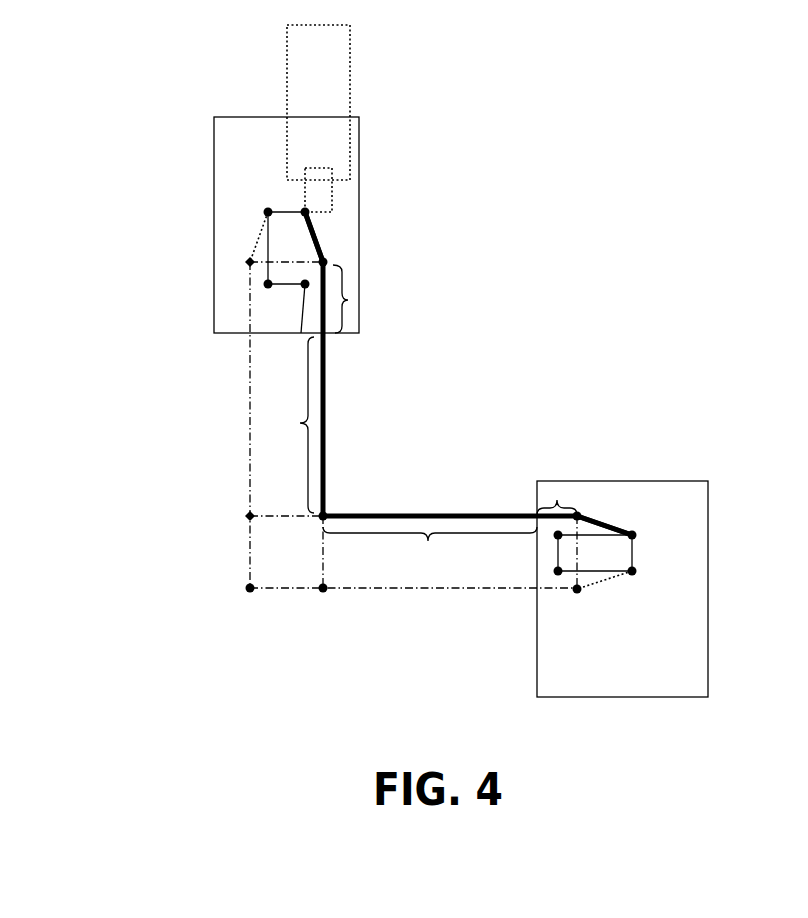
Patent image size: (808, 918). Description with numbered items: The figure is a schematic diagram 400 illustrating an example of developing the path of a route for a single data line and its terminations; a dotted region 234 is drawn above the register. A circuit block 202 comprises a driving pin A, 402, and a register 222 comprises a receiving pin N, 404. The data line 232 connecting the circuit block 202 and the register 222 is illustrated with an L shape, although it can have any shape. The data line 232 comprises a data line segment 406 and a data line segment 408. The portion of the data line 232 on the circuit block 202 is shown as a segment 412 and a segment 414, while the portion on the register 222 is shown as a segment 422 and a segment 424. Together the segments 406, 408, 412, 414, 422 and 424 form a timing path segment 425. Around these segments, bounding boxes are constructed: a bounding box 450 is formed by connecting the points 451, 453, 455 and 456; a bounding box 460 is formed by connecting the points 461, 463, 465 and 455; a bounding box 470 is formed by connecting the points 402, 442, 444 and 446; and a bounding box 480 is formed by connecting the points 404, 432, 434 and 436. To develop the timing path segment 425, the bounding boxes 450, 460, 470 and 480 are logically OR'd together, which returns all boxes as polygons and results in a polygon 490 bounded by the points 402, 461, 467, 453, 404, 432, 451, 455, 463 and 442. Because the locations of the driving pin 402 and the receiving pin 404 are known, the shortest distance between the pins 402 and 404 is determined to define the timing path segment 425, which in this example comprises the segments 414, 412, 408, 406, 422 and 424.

The system 400 is at (132, 83).
The dotted region 234 is at (350, 80).
The register 222 is at (262, 144).
The circuit block 202 is at (697, 687).
The data line 232 is at (399, 457).
The timing path segment 425 is at (511, 379).
The polygon 490 is at (219, 549).
The bounding box 480 is at (300, 208).
The point 432 is at (268, 212).
The point 451 is at (250, 262).
The point 434 is at (268, 286).
The receiving pin 404 is at (310, 212).
The segment 424 is at (317, 238).
The point 453 is at (330, 265).
The segment 422 is at (348, 300).
The point 436 is at (301, 333).
The data line segment 406 is at (287, 425).
The bounding box 450 is at (250, 395).
The point 465 is at (250, 516).
The point 467 is at (330, 513).
The point 456 is at (323, 588).
The point 455 is at (250, 588).
The bounding box 460 is at (452, 590).
The data line segment 408 is at (430, 550).
The segment 412 is at (557, 500).
The point 444 is at (555, 533).
The point 461 is at (579, 514).
The segment 414 is at (618, 531).
The driving pin 402 is at (645, 533).
The bounding box 470 is at (632, 555).
The point 442 is at (634, 572).
The point 446 is at (558, 571).
The point 463 is at (580, 591).